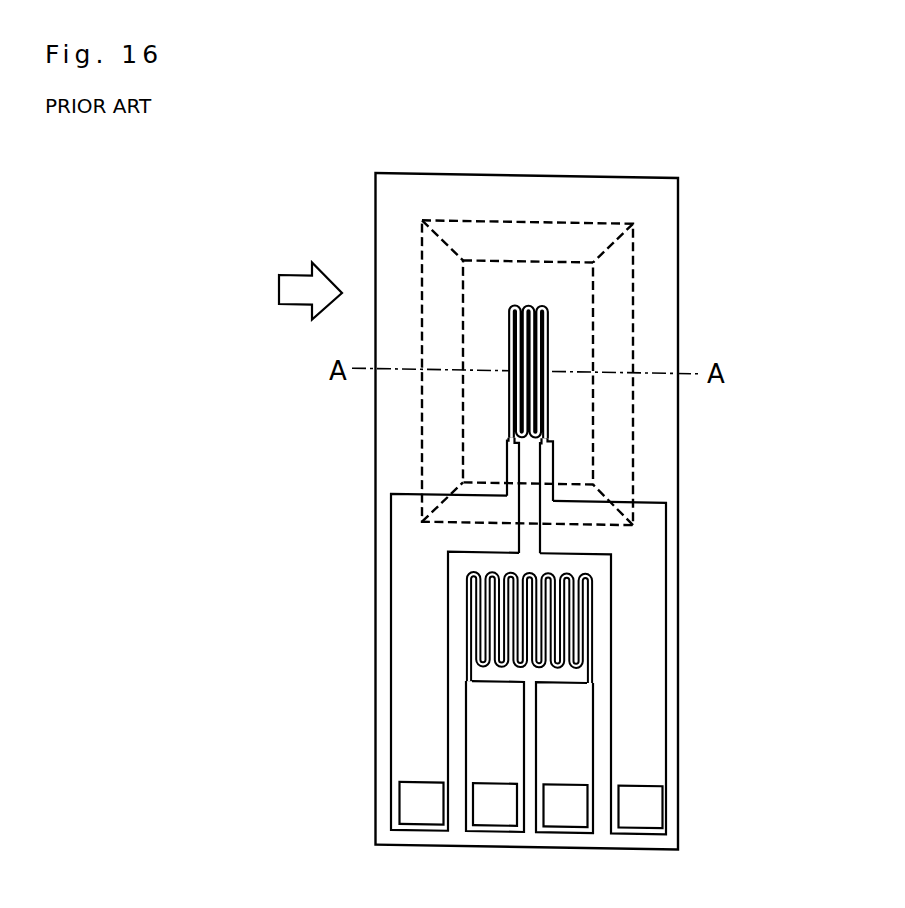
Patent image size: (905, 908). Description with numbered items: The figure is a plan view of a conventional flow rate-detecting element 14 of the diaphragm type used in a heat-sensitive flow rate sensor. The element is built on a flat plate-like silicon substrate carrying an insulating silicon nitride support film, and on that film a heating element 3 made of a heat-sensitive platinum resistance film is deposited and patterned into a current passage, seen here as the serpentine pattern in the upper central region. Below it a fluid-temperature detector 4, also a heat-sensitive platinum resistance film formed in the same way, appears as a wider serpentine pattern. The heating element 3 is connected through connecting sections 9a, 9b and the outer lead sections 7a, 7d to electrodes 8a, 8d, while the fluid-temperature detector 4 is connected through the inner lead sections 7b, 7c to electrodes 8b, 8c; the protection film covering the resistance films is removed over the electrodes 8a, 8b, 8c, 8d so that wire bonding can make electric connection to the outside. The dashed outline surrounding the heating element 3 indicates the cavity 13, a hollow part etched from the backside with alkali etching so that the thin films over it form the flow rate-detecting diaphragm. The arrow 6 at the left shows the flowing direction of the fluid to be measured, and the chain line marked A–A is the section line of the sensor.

The heating element 3 is at (548, 343).
The fluid-temperature detector 4 is at (588, 620).
The arrow 6 is at (293, 286).
The lead section 7a is at (410, 732).
The lead section 7b is at (480, 701).
The lead section 7c is at (568, 699).
The lead section 7d is at (643, 737).
The electrode 8a is at (421, 810).
The electrode 8b is at (495, 810).
The electrode 8c is at (567, 809).
The electrode 8d is at (640, 811).
The connecting section 9a is at (507, 453).
The connecting section 9b is at (548, 456).
The cavity 13 is at (548, 240).
The flow rate-detecting element 14 is at (377, 790).